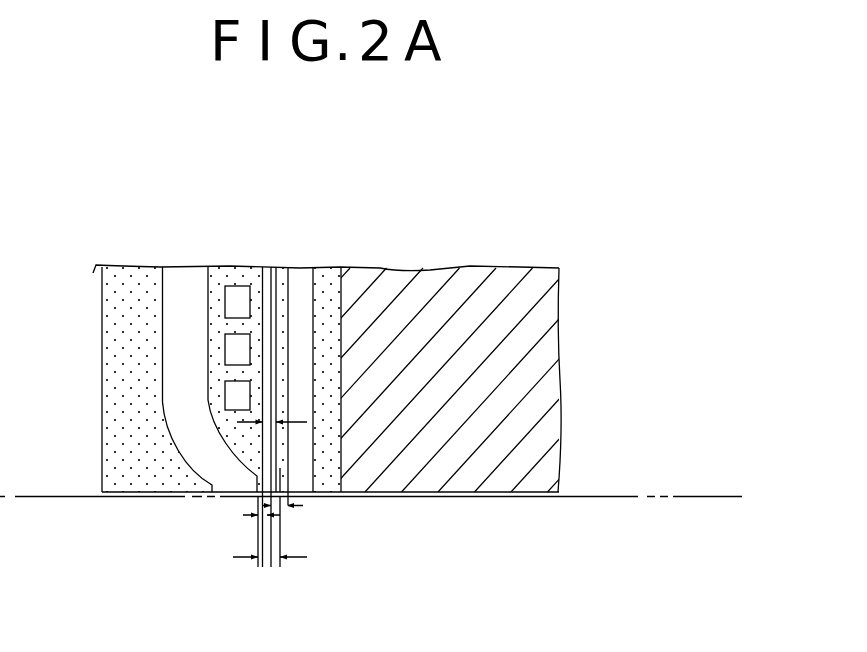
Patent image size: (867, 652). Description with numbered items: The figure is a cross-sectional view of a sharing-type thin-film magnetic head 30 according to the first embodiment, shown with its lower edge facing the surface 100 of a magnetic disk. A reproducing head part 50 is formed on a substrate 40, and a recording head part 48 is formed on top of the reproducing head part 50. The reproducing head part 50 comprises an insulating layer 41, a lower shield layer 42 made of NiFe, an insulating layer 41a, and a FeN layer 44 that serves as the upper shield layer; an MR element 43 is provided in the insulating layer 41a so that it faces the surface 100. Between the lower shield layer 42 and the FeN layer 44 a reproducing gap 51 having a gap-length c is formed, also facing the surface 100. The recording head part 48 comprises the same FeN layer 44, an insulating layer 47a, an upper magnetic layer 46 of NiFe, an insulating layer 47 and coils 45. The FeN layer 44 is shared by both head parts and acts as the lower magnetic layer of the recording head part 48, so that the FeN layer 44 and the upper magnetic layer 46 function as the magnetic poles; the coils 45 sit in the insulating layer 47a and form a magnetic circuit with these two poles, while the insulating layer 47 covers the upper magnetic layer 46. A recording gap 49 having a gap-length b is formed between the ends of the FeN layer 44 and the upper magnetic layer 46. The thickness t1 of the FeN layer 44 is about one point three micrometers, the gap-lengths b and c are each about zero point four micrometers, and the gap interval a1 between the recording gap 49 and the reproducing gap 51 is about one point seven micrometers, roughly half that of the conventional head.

The thin-film magnetic head 30 is at (483, 152).
The substrate 40 is at (543, 453).
The insulating layer 41 is at (336, 270).
The insulating layer 41a is at (298, 278).
The lower shield layer 42 is at (328, 285).
The MR element 43 is at (288, 480).
The FeN layer 44 is at (277, 277).
The coils 45 is at (233, 286).
The upper magnetic layer 46 is at (187, 287).
The insulating layer 47 is at (108, 312).
The insulating layer 47a is at (253, 277).
The recording head part 48 is at (208, 510).
The recording gap 49 is at (258, 499).
The reproducing head part 50 is at (323, 500).
The reproducing gap 51 is at (307, 500).
The surface of the magnetic disk 100 is at (693, 493).
The thickness of the FeN layer t1 is at (263, 420).
The gap interval a1 is at (270, 546).
The gap-length of the recording gap b is at (250, 532).
The gap-length of the reproducing gap c is at (287, 524).